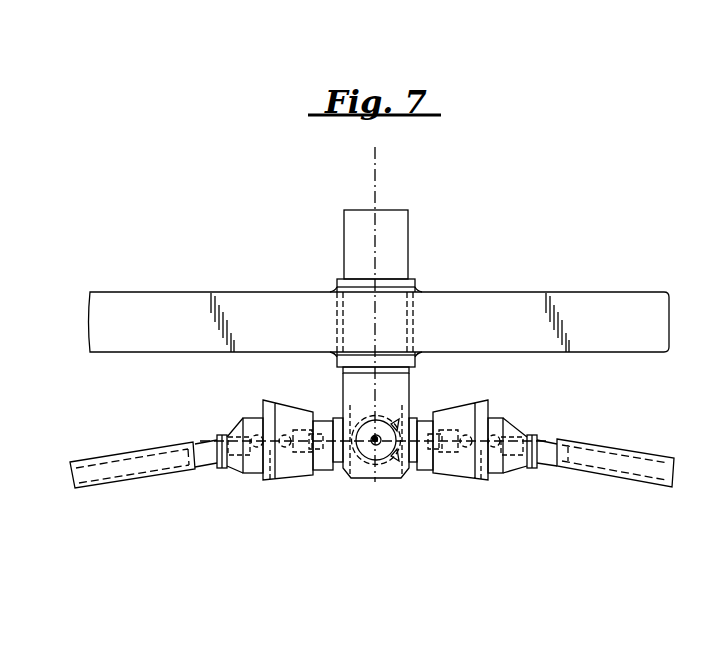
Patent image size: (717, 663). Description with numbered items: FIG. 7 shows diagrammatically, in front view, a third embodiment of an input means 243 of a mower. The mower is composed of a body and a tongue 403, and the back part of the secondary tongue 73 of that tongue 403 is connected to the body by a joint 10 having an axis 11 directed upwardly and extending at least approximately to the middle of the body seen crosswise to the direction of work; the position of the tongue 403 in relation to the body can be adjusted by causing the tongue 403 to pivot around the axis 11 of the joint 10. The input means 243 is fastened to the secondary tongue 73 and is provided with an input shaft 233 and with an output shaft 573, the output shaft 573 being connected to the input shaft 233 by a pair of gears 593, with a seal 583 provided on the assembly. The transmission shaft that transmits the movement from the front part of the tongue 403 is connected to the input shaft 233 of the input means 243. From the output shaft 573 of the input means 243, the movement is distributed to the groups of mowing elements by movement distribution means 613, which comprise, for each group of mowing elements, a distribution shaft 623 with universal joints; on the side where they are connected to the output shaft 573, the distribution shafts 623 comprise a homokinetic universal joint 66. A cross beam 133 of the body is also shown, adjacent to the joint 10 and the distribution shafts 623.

The axis 11 is at (378, 152).
The secondary tongue 73 is at (401, 218).
The tongue 403 is at (358, 205).
The cross beam 133 is at (138, 303).
The joint 10 is at (412, 320).
The input means 243 is at (407, 393).
The input shaft 233 is at (373, 437).
The output shaft 573 is at (358, 458).
The pair of gears 593 is at (393, 462).
The seal 583 is at (328, 462).
The homokinetic universal joint 66 is at (275, 480).
The distribution shaft 623 is at (134, 478).
The movement distribution means 613 is at (110, 450).